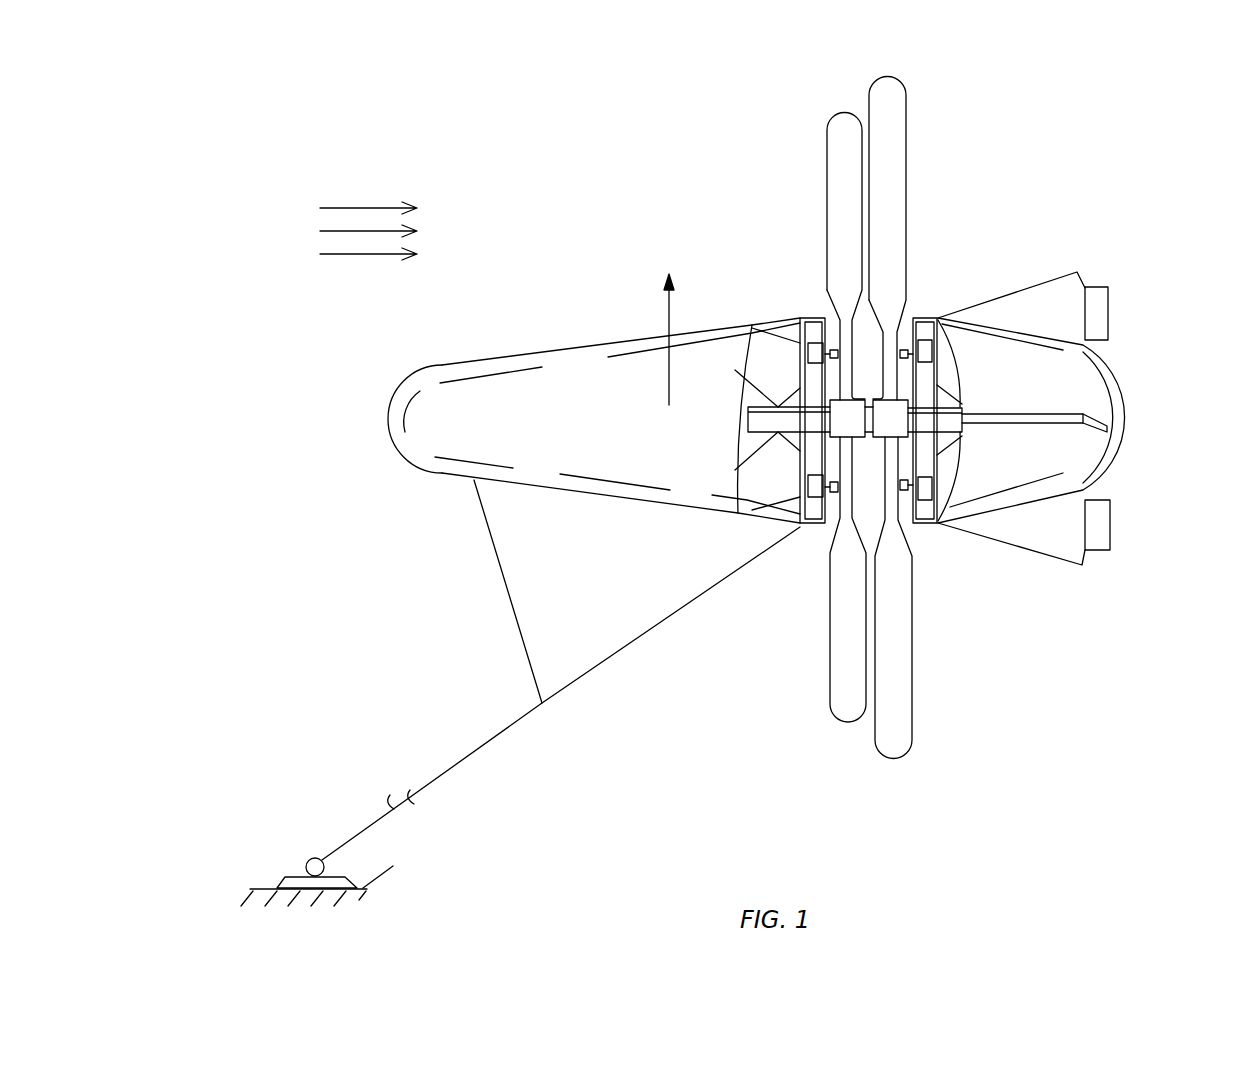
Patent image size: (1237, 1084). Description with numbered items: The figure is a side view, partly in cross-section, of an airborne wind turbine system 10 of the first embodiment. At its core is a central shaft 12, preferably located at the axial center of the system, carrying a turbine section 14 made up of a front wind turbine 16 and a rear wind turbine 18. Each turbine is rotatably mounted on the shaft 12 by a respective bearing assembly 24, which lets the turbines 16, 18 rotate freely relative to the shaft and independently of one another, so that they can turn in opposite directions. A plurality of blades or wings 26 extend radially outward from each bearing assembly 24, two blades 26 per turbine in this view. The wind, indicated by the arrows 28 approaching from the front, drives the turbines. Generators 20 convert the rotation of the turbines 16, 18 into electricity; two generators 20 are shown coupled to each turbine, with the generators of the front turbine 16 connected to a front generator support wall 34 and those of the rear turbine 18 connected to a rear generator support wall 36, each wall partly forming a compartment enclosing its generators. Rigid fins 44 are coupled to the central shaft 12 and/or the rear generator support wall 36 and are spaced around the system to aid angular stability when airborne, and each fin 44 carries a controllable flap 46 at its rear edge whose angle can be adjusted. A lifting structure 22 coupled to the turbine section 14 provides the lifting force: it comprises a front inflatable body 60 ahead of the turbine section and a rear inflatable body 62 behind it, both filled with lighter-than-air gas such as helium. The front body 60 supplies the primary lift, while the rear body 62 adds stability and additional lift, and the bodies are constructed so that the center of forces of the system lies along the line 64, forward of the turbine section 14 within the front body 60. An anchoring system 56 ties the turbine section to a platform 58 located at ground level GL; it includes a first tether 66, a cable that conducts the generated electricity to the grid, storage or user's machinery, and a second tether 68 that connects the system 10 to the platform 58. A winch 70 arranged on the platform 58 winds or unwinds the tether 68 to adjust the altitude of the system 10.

The airborne wind turbine system 10 is at (1010, 660).
The central shaft 12 is at (770, 405).
The turbine section 14 is at (870, 457).
The front wind turbine 16 is at (828, 144).
The rear wind turbine 18 is at (906, 133).
The generators 20 is at (808, 335).
The lifting structure 22 is at (594, 401).
The bearing assembly 24 is at (912, 412).
The blades 26 is at (827, 237).
The wind direction 28 is at (362, 207).
The front generator support wall 34 is at (806, 318).
The rear generator support wall 36 is at (931, 318).
The rigid fins 44 is at (1078, 272).
The controllable flap 46 is at (1110, 308).
The anchoring system 56 is at (498, 693).
The platform 58 is at (285, 877).
The front inflatable body 60 is at (640, 338).
The rear inflatable body 62 is at (1071, 410).
The center of forces line 64 is at (666, 283).
The first tether 66 is at (497, 567).
The second tether 68 is at (645, 635).
The winch 70 is at (310, 859).